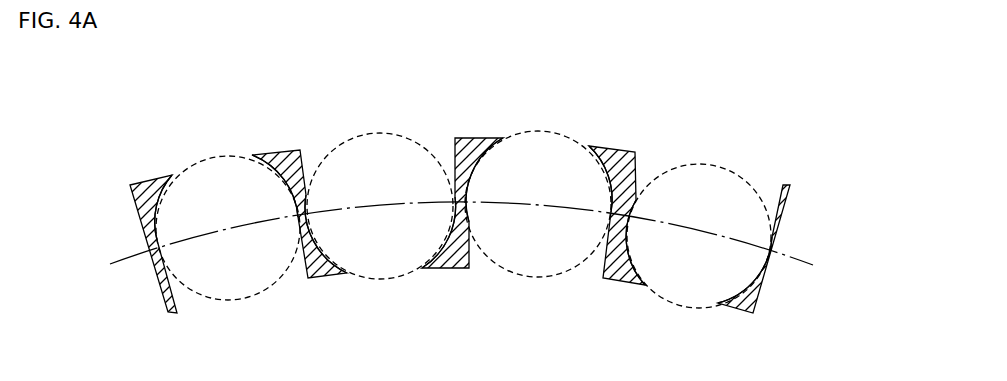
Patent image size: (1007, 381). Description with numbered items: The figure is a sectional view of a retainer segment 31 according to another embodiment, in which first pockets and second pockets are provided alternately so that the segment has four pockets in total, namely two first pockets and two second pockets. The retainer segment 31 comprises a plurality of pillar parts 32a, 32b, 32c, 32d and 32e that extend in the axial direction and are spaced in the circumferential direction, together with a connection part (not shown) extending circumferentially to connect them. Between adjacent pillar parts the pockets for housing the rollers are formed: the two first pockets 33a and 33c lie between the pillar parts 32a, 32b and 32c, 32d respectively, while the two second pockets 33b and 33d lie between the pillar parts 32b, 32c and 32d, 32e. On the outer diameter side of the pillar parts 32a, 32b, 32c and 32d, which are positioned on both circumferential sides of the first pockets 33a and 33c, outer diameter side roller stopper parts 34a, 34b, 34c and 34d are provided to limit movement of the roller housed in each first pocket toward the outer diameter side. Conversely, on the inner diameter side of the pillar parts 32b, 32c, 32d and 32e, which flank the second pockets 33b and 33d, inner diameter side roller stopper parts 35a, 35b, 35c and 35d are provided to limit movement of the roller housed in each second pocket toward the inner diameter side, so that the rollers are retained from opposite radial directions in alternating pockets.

The retainer segment 31 is at (765, 82).
The pillar part 32a is at (140, 188).
The pillar part 32b is at (292, 158).
The pillar part 32c is at (468, 152).
The pillar part 32d is at (632, 150).
The pillar part 32e is at (755, 297).
The first pocket 33a is at (240, 280).
The second pocket 33b is at (380, 150).
The first pocket 33c is at (543, 150).
The second pocket 33d is at (708, 177).
The outer diameter side roller stopper part 34a is at (162, 194).
The outer diameter side roller stopper part 34b is at (268, 175).
The outer diameter side roller stopper part 34c is at (482, 167).
The outer diameter side roller stopper part 34d is at (605, 150).
The inner diameter side roller stopper part 35a is at (333, 277).
The inner diameter side roller stopper part 35b is at (437, 270).
The inner diameter side roller stopper part 35c is at (630, 283).
The inner diameter side roller stopper part 35d is at (727, 310).